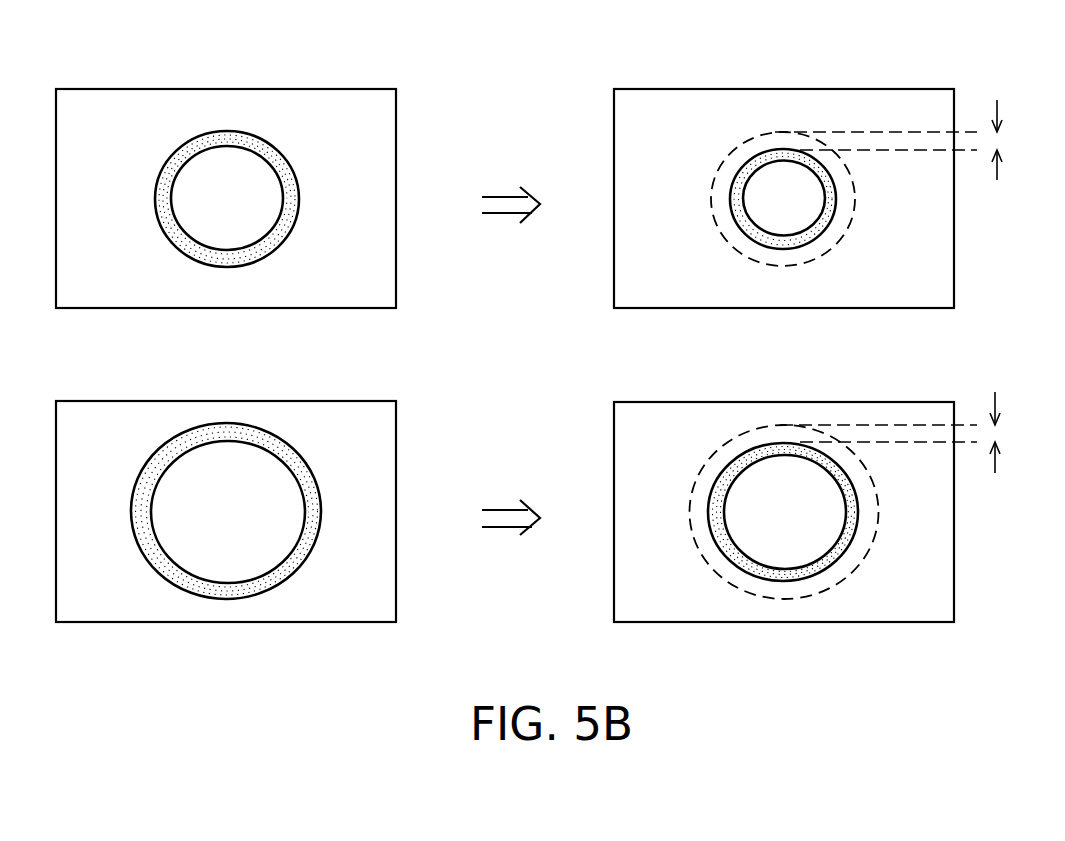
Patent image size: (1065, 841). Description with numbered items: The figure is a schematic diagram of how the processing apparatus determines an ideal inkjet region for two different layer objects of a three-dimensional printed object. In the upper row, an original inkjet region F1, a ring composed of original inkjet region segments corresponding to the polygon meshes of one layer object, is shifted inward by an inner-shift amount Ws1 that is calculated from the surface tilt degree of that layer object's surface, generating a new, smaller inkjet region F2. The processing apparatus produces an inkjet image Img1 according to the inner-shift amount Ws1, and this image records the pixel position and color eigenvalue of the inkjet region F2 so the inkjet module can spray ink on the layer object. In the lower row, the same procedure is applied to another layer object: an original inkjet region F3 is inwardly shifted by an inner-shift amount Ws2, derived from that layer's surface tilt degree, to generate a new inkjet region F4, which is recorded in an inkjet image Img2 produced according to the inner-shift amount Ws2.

The original inkjet region F1 is at (227, 131).
The new inkjet region F2 is at (830, 227).
The original inkjet region F3 is at (226, 423).
The new inkjet region F4 is at (842, 557).
The inkjet image Img1 is at (910, 89).
The inkjet image Img2 is at (910, 402).
The inner-shift amount Ws1 is at (914, 140).
The inner-shift amount Ws2 is at (914, 432).